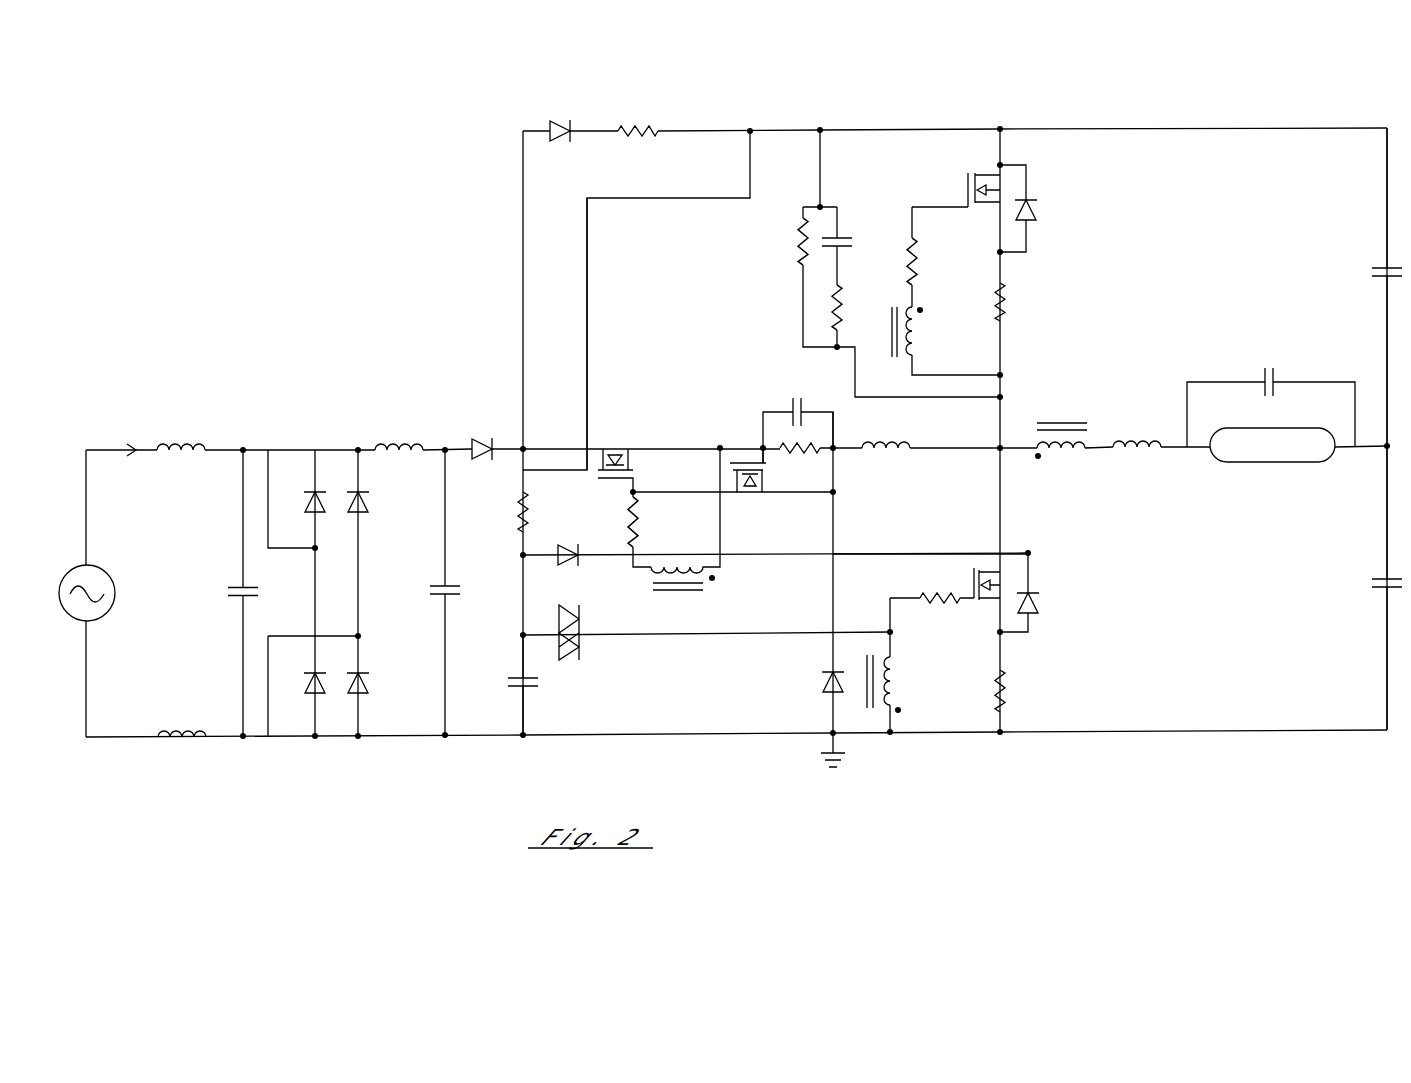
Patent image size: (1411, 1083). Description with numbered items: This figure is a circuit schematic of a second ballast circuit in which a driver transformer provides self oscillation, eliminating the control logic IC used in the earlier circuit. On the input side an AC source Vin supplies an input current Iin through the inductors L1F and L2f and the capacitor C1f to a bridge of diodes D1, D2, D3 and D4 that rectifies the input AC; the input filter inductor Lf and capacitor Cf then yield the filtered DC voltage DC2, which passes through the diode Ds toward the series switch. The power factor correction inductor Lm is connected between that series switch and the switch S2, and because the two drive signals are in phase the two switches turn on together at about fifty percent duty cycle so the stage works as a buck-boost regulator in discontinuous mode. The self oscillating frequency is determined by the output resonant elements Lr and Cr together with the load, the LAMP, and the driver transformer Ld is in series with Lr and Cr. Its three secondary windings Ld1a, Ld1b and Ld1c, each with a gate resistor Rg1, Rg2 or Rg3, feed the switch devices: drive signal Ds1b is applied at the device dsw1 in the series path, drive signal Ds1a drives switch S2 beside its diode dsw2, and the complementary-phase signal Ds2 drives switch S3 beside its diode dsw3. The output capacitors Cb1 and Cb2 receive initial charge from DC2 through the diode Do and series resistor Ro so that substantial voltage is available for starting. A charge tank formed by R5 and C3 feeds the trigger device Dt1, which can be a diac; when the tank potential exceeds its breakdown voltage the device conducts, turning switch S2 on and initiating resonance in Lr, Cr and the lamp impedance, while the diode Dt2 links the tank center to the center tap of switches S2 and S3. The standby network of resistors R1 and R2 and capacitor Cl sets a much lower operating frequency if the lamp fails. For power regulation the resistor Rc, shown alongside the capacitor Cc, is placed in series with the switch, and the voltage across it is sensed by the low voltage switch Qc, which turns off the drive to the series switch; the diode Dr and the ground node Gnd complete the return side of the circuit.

The AC input voltage source Vin is at (135, 610).
The input current Iin is at (133, 434).
The first input filter inductor L1F is at (187, 430).
The input filter capacitor C1f is at (227, 593).
The second input filter inductor L2f is at (185, 719).
The rectifier diode D1 is at (303, 486).
The rectifier diode D2 is at (370, 485).
The rectifier diode D3 is at (303, 669).
The rectifier diode D4 is at (370, 669).
The input filter inductor Lf is at (402, 430).
The input filter capacitor Cf is at (432, 592).
The series diode Ds is at (484, 434).
The filtered DC voltage DC2 is at (561, 334).
The resistor R5 is at (507, 508).
The capacitor C3 is at (511, 685).
The drive signal Ds1b is at (581, 538).
The diode Dt2 is at (593, 617).
The trigger device Dt1 is at (593, 628).
The switch with body diode dsw1 is at (667, 455).
The gate resistor Rg1 is at (659, 529).
The drive transformer winding Ld1a is at (701, 534).
The low voltage switch Qc is at (781, 486).
The capacitor Cc is at (798, 420).
The resistor Rc is at (800, 463).
The diode Dr is at (823, 668).
The ground Gnd is at (833, 767).
The power factor correction inductor Lm is at (887, 430).
The output diode Do is at (561, 115).
The output resistor Ro is at (638, 115).
The standby resistor R1 is at (883, 302).
The standby capacitor Cl is at (845, 246).
The standby resistor R2 is at (854, 312).
The drive signal Ds2 is at (899, 192).
The gate resistor Rg3 is at (937, 257).
The drive transformer winding Ld1c is at (946, 341).
The switch S3 is at (955, 160).
The switch diode dsw3 is at (1045, 208).
The driver transformer Ld is at (1061, 427).
The resonant inductor Lr is at (1137, 429).
The resonant capacitor Cr is at (1271, 396).
The lamp LAMP is at (1272, 445).
The output capacitor Cb1 is at (1367, 287).
The output capacitor Cb2 is at (1370, 588).
The drive signal Ds1a is at (930, 569).
The switch diode dsw2 is at (1049, 594).
The switch S2 is at (1025, 566).
The gate resistor Rg2 is at (932, 586).
The drive transformer winding Ld1b is at (909, 665).